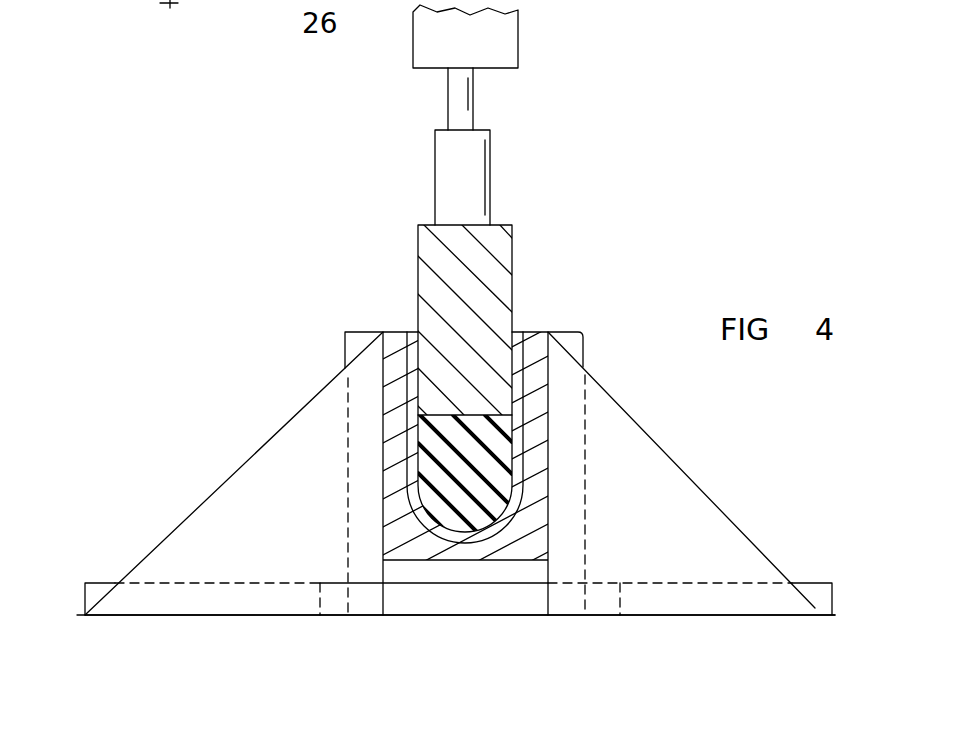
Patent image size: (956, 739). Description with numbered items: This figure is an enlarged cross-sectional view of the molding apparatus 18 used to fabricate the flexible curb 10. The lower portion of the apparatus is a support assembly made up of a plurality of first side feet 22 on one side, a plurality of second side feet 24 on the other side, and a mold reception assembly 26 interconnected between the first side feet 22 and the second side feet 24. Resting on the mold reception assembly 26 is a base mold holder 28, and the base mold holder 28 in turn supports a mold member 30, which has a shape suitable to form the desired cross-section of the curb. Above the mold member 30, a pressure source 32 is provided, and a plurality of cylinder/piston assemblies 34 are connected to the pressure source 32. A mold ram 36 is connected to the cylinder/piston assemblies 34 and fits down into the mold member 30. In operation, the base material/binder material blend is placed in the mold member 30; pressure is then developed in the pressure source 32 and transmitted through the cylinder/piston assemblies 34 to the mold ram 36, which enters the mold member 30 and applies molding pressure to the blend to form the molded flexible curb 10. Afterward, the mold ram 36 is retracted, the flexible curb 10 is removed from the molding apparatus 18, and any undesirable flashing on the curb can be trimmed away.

The flexible curb 10 is at (545, 423).
The molding apparatus 18 is at (692, 210).
The first side feet 22 is at (270, 458).
The second side feet 24 is at (673, 512).
The mold reception assembly 26 is at (567, 554).
The base mold holder 28 is at (537, 373).
The mold member 30 is at (404, 356).
The pressure source 32 is at (498, 50).
The cylinder/piston assemblies 34 is at (504, 221).
The mold ram 36 is at (497, 267).